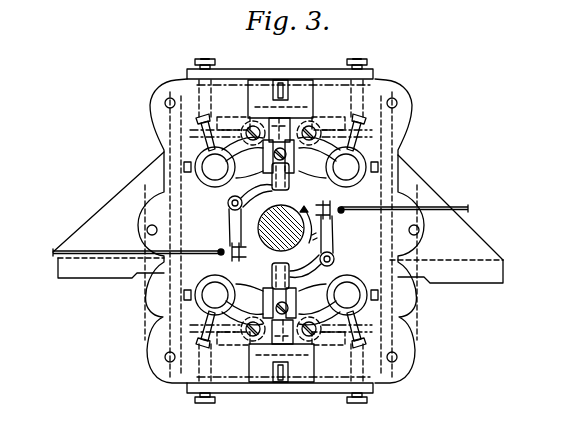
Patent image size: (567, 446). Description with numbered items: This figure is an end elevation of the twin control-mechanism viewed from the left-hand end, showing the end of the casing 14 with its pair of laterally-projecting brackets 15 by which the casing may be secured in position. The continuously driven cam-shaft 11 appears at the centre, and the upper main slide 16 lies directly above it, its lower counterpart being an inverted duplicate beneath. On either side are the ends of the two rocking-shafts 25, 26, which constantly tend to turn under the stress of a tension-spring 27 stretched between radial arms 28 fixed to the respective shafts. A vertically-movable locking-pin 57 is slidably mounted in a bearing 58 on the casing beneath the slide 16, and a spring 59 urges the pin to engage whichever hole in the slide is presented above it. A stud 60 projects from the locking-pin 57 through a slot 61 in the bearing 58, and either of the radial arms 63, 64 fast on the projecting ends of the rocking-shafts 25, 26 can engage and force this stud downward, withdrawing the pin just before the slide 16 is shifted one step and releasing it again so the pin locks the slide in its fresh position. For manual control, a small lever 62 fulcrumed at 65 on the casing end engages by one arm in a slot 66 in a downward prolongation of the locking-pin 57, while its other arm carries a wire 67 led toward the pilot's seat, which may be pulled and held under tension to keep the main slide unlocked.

The cam-shaft 11 is at (268, 209).
The casing 14 is at (168, 191).
The brackets 15 is at (87, 279).
The upper main slide 16 is at (300, 93).
The rocking-shaft 25 is at (352, 167).
The rocking-shaft 26 is at (209, 167).
The tension-spring 27 is at (224, 126).
The radial arms 28 is at (206, 141).
The locking-pin 57 is at (280, 99).
The bearing 58 is at (254, 125).
The spring 59 is at (314, 124).
The stud 60 is at (294, 166).
The slot 61 is at (274, 160).
The lever 62 is at (229, 226).
The radial arm 63 is at (319, 157).
The radial arm 64 is at (242, 157).
The fulcrum 65 is at (228, 204).
The slot 66 is at (292, 184).
The wire 67 is at (100, 250).